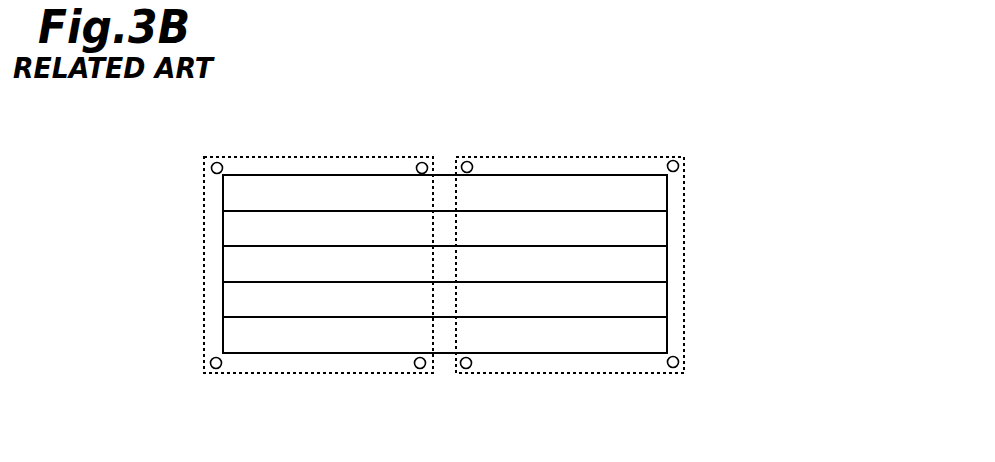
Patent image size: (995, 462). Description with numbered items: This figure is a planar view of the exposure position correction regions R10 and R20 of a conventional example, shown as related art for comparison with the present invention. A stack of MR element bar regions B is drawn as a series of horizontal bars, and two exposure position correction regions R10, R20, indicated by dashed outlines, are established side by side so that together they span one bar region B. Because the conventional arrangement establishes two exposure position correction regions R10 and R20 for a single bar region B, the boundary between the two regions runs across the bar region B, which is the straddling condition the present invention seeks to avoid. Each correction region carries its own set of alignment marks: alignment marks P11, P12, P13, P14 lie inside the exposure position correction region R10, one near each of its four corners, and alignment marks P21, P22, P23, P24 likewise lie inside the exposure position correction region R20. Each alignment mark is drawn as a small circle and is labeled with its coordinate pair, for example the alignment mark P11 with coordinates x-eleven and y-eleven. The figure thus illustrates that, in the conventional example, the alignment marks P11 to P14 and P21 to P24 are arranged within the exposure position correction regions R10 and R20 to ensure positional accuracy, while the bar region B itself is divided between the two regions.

The exposure position correction region R10 is at (285, 157).
The exposure position correction region R20 is at (633, 157).
The MR element bar region B is at (648, 345).
The alignment mark P11 is at (219, 162).
The alignment mark P12 is at (421, 162).
The alignment mark P13 is at (216, 369).
The alignment mark P14 is at (420, 369).
The alignment mark P21 is at (468, 161).
The alignment mark P22 is at (674, 160).
The alignment mark P23 is at (466, 369).
The alignment mark P24 is at (673, 368).